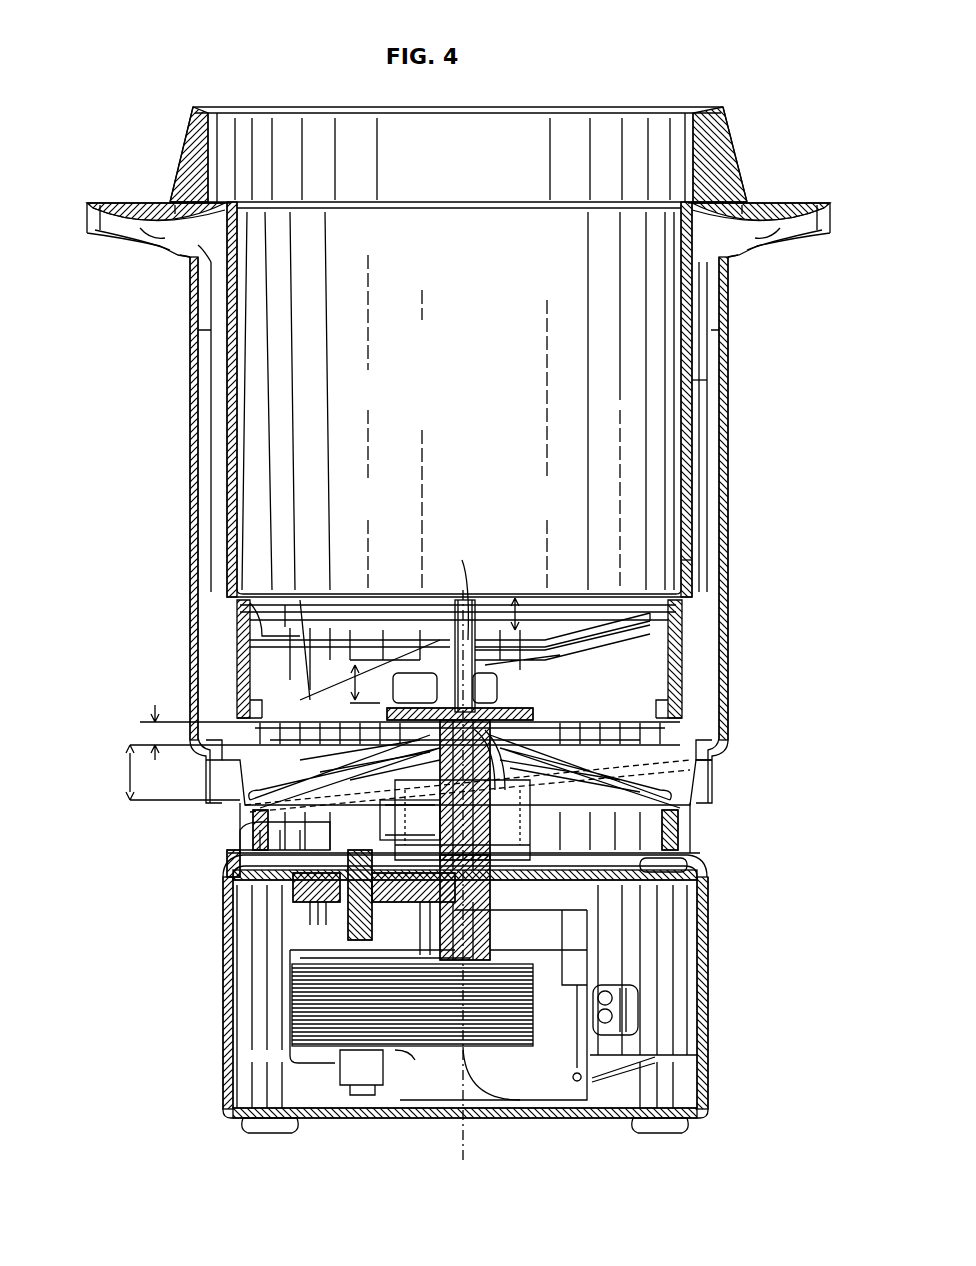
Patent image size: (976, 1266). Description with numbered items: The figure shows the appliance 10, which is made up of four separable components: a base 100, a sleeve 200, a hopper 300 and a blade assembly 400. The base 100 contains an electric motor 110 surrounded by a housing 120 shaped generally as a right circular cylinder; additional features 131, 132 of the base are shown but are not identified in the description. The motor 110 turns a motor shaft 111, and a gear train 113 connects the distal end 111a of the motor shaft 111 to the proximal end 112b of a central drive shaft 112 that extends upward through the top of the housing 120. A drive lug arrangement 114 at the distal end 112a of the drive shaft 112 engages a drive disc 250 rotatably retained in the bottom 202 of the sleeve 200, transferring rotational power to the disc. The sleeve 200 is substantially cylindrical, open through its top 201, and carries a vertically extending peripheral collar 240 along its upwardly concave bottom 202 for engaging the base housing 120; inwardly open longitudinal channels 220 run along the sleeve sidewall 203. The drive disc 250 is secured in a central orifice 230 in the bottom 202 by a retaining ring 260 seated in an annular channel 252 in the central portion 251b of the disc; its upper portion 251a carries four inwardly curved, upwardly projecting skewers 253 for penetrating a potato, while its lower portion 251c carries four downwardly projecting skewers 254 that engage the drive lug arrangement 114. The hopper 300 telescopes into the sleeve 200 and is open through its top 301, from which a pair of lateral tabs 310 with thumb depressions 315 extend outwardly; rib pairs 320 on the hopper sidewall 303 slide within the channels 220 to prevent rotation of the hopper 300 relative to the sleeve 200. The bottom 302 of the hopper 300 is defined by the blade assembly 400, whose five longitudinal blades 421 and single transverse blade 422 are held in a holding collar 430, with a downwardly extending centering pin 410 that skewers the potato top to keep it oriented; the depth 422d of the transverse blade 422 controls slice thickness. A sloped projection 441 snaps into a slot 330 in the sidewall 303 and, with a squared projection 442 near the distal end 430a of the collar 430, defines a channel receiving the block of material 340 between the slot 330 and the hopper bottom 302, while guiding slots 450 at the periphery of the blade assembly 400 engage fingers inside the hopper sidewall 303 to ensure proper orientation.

The appliance 10 is at (95, 38).
The base 100 is at (224, 950).
The electric motor 110 is at (320, 992).
The motor shaft 111 is at (358, 925).
The distal end of the motor shaft 111a is at (374, 901).
The central drive shaft 112 is at (490, 822).
The distal end of the drive shaft 112a is at (500, 712).
The proximal end of the drive shaft 112b is at (490, 872).
The gear train 113 is at (415, 905).
The drive lug arrangement 114 is at (490, 770).
The housing 120 is at (224, 1086).
The base top plate 131 is at (225, 858).
The mounting ring 132 is at (240, 836).
The sleeve 200 is at (518, 93).
The top of the sleeve 201 is at (280, 107).
The bottom of the sleeve 202 is at (690, 820).
The sleeve sidewall 203 is at (205, 492).
The longitudinal channel 220 is at (192, 525).
The central orifice 230 is at (500, 838).
The peripheral collar 240 is at (700, 860).
The drive disc 250 is at (550, 712).
The upper portion of the drive disc 251a is at (417, 681).
The central portion of the drive disc 251b is at (190, 732).
The lower portion of the drive disc 251c is at (166, 772).
The annular channel 252 is at (700, 790).
The upwardly projecting skewers 253 is at (462, 560).
The downwardly projecting skewers 254 is at (404, 821).
The retaining ring 260 is at (250, 798).
The hopper 300 is at (224, 308).
The top of the hopper 301 is at (470, 202).
The bottom of the hopper 302 is at (690, 632).
The hopper sidewall 303 is at (704, 404).
The lateral tabs 310 is at (92, 203).
The downwardly concave depressions 315 is at (135, 203).
The longitudinal rib pairs 320 is at (196, 352).
The slots 330 is at (236, 652).
The block of material 340 is at (236, 712).
The blade assembly 400 is at (588, 605).
The centering pin 410 is at (455, 612).
The longitudinal blades 421 is at (288, 603).
The transverse blade 422 is at (540, 650).
The depth of the transverse blade 422d is at (513, 598).
The holding collar 430 is at (250, 620).
The distal end of the collar 430a is at (345, 640).
The sloped projection 441 is at (236, 690).
The squared projection 442 is at (222, 760).
The guiding slots 450 is at (315, 605).